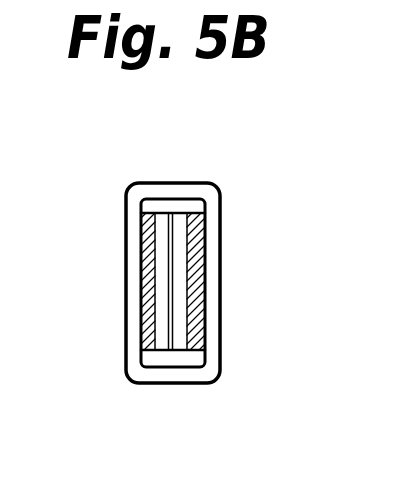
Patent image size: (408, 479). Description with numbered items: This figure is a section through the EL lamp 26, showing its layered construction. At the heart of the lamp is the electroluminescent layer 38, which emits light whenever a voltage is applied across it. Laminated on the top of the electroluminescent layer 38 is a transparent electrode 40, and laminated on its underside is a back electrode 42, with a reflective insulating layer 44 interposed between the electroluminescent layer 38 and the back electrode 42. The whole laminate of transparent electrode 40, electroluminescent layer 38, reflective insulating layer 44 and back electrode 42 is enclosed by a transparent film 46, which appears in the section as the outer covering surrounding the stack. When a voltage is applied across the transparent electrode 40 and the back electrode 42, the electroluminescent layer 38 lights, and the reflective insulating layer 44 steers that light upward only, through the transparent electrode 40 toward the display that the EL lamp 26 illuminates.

The EL lamp 26 is at (238, 172).
The electroluminescent layer 38 is at (162, 200).
The transparent electrode 40 is at (146, 198).
The back electrode 42 is at (200, 262).
The reflective insulating layer 44 is at (181, 200).
The transparent film 46 is at (173, 370).